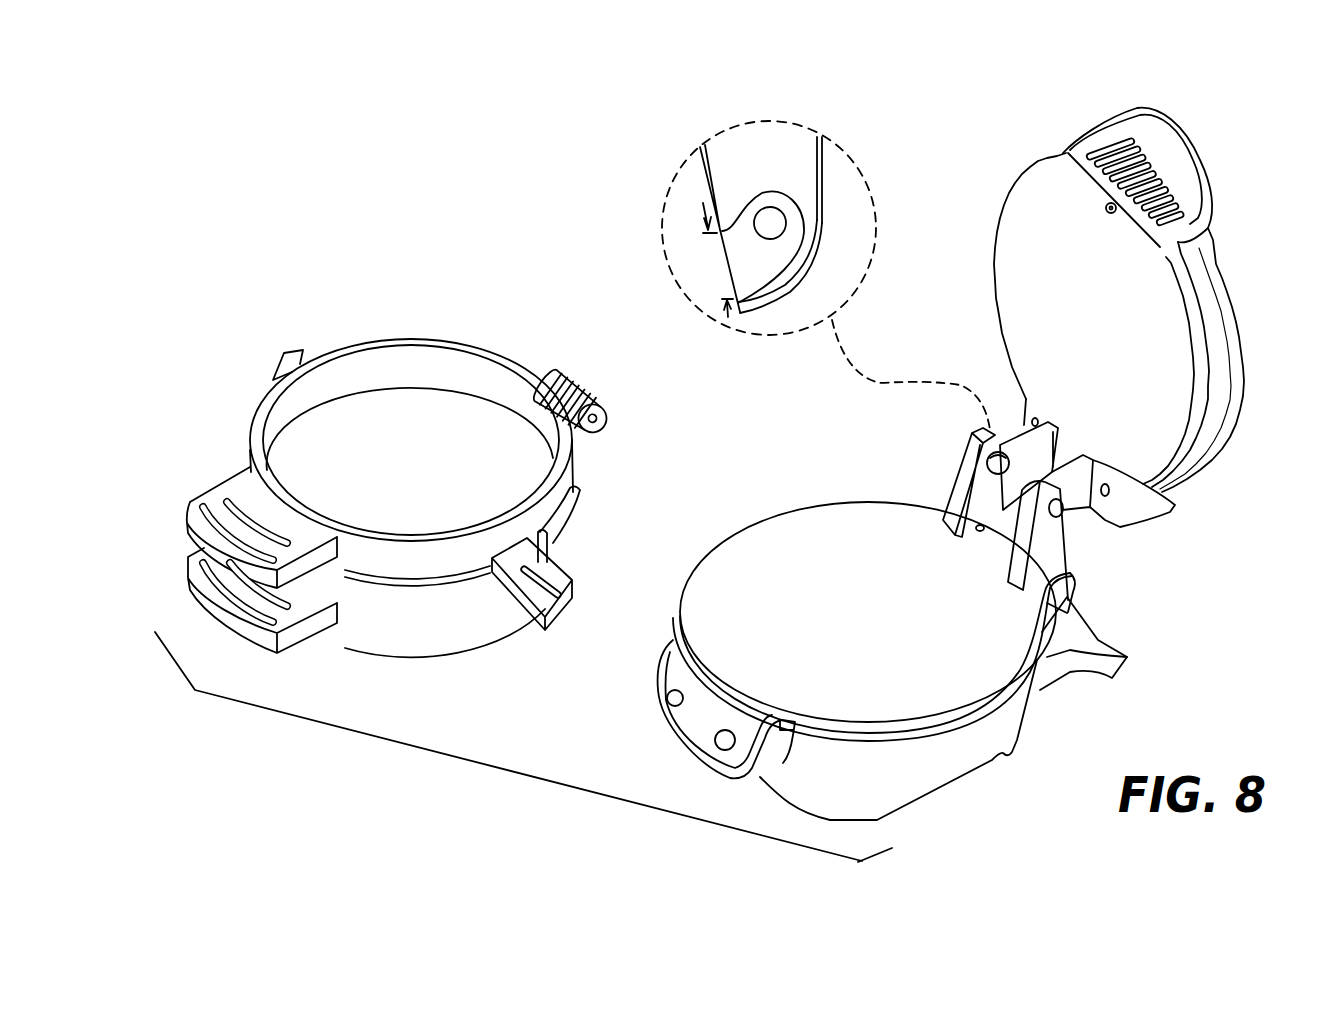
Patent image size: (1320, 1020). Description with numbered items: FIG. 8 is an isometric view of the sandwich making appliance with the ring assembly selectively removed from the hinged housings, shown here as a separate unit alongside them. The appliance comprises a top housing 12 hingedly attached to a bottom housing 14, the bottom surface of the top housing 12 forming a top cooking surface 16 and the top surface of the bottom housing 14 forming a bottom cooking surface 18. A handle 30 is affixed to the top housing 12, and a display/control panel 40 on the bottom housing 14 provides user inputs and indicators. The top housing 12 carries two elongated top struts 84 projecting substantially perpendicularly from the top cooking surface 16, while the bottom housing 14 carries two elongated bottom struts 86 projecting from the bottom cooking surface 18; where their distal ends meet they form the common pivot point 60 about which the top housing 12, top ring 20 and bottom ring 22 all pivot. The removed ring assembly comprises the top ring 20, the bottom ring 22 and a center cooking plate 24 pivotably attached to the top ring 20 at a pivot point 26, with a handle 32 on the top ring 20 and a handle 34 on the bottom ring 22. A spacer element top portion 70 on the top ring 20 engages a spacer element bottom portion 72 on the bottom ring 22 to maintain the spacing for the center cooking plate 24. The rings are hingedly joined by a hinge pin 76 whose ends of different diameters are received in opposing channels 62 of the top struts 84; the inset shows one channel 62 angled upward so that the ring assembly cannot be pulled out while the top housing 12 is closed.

The top housing 12 is at (1225, 328).
The bottom housing 14 is at (923, 764).
The top cooking surface 16 is at (1020, 226).
The bottom cooking surface 18 is at (818, 528).
The top ring 20 is at (423, 338).
The bottom ring 22 is at (452, 633).
The center cooking plate 24 is at (380, 432).
The pivot point 26 is at (290, 362).
The handle 30 is at (1187, 140).
The handle 32 is at (217, 497).
The handle 34 is at (200, 572).
The display/control panel 40 is at (692, 718).
The pivot point 60 is at (1070, 512).
The channel 62 is at (972, 452).
The spacer element top portion 70 is at (578, 510).
The spacer element bottom portion 72 is at (578, 545).
The hinge pin 76 is at (600, 425).
The top strut 84 is at (1155, 505).
The bottom strut 86 is at (1060, 553).